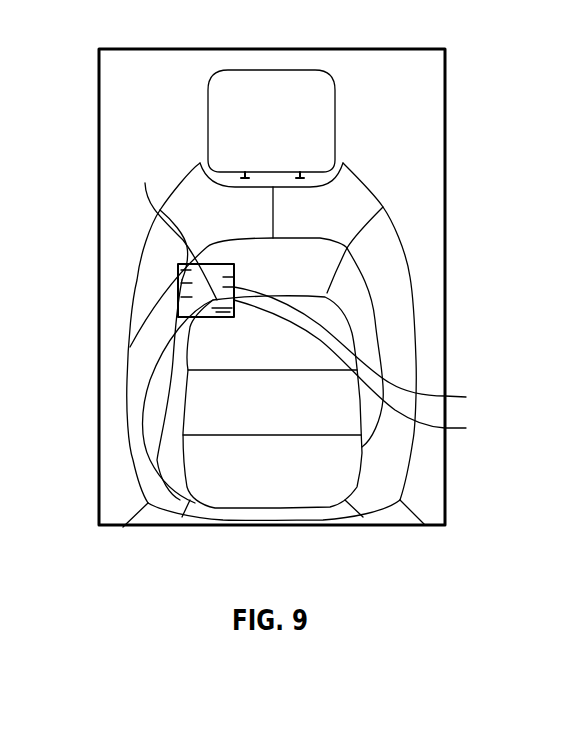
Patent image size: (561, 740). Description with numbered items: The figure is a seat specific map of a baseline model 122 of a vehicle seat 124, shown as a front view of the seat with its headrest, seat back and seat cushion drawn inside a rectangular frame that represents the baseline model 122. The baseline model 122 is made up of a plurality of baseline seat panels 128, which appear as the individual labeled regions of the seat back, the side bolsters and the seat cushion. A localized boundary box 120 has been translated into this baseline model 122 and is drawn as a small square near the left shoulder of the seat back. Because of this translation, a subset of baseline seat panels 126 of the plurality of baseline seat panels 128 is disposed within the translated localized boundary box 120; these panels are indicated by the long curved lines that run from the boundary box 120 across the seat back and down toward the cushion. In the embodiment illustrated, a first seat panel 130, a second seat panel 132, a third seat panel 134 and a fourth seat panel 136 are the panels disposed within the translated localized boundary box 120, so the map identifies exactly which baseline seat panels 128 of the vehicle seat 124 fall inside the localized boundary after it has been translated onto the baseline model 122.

The localized boundary box 120 is at (172, 227).
The baseline model 122 is at (116, 116).
The vehicle seat 124 is at (162, 70).
The subset of baseline seat panels 126 is at (178, 271).
The plurality of baseline seat panels 128 is at (201, 228).
The first seat panel 130 is at (178, 283).
The second seat panel 132 is at (178, 293).
The third seat panel 134 is at (490, 397).
The fourth seat panel 136 is at (178, 315).